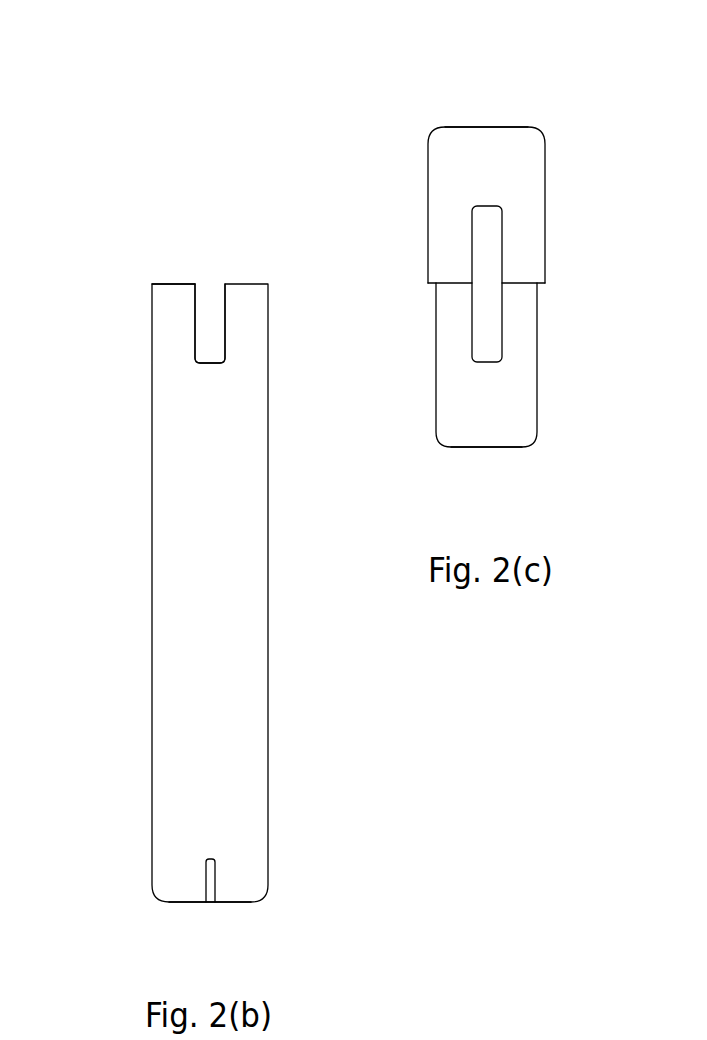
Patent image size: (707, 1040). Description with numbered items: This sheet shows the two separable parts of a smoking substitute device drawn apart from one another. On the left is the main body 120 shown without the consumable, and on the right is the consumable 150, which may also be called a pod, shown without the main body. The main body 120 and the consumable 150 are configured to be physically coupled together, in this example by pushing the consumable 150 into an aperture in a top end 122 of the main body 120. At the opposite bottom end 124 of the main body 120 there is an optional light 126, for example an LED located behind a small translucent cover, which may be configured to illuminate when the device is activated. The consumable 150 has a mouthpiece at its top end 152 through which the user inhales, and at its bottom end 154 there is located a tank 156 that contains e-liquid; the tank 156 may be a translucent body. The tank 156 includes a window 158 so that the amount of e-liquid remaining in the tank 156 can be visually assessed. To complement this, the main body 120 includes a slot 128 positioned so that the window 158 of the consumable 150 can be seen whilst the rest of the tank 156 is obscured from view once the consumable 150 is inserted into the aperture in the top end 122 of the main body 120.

In FIG. 2B, the main body 120 is at (152, 610).
In FIG. 2B, the top end of the main body 122 is at (213, 280).
In FIG. 2B, the bottom end of the main body 124 is at (230, 907).
In FIG. 2B, the light 126 is at (203, 881).
In FIG. 2B, the slot 128 is at (208, 320).
In FIG. 2C, the consumable 150 is at (427, 157).
In FIG. 2C, the top end of the consumable 152 is at (497, 116).
In FIG. 2C, the bottom end of the consumable 154 is at (498, 453).
In FIG. 2C, the tank 156 is at (477, 412).
In FIG. 2C, the window 158 is at (492, 262).